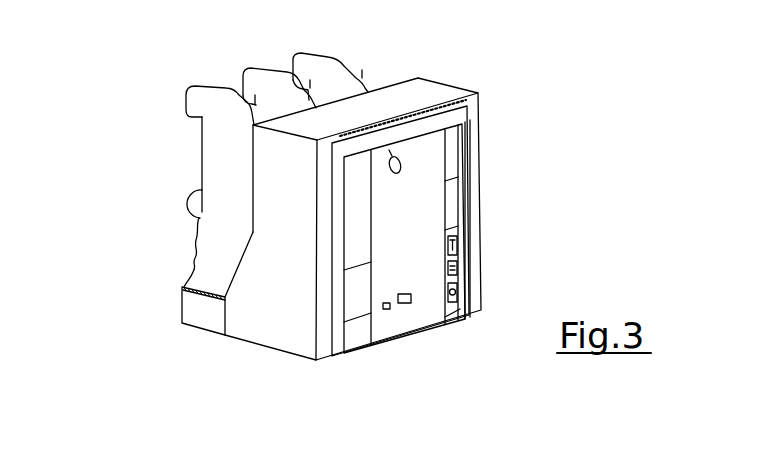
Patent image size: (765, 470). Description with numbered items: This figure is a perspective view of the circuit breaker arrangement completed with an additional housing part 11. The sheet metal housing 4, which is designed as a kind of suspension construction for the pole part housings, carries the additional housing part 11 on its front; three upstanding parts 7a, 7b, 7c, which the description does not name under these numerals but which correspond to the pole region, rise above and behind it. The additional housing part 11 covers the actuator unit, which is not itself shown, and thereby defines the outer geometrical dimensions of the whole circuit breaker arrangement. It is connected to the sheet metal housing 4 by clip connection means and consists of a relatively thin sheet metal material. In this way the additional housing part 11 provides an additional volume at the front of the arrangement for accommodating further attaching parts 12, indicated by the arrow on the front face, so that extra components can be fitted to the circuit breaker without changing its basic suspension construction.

The sheet metal housing 4 is at (195, 308).
The first pole 7a is at (202, 100).
The second pole 7b is at (249, 82).
The third pole 7c is at (310, 62).
The additional housing part 11 is at (417, 97).
The further attaching parts 12 is at (494, 254).